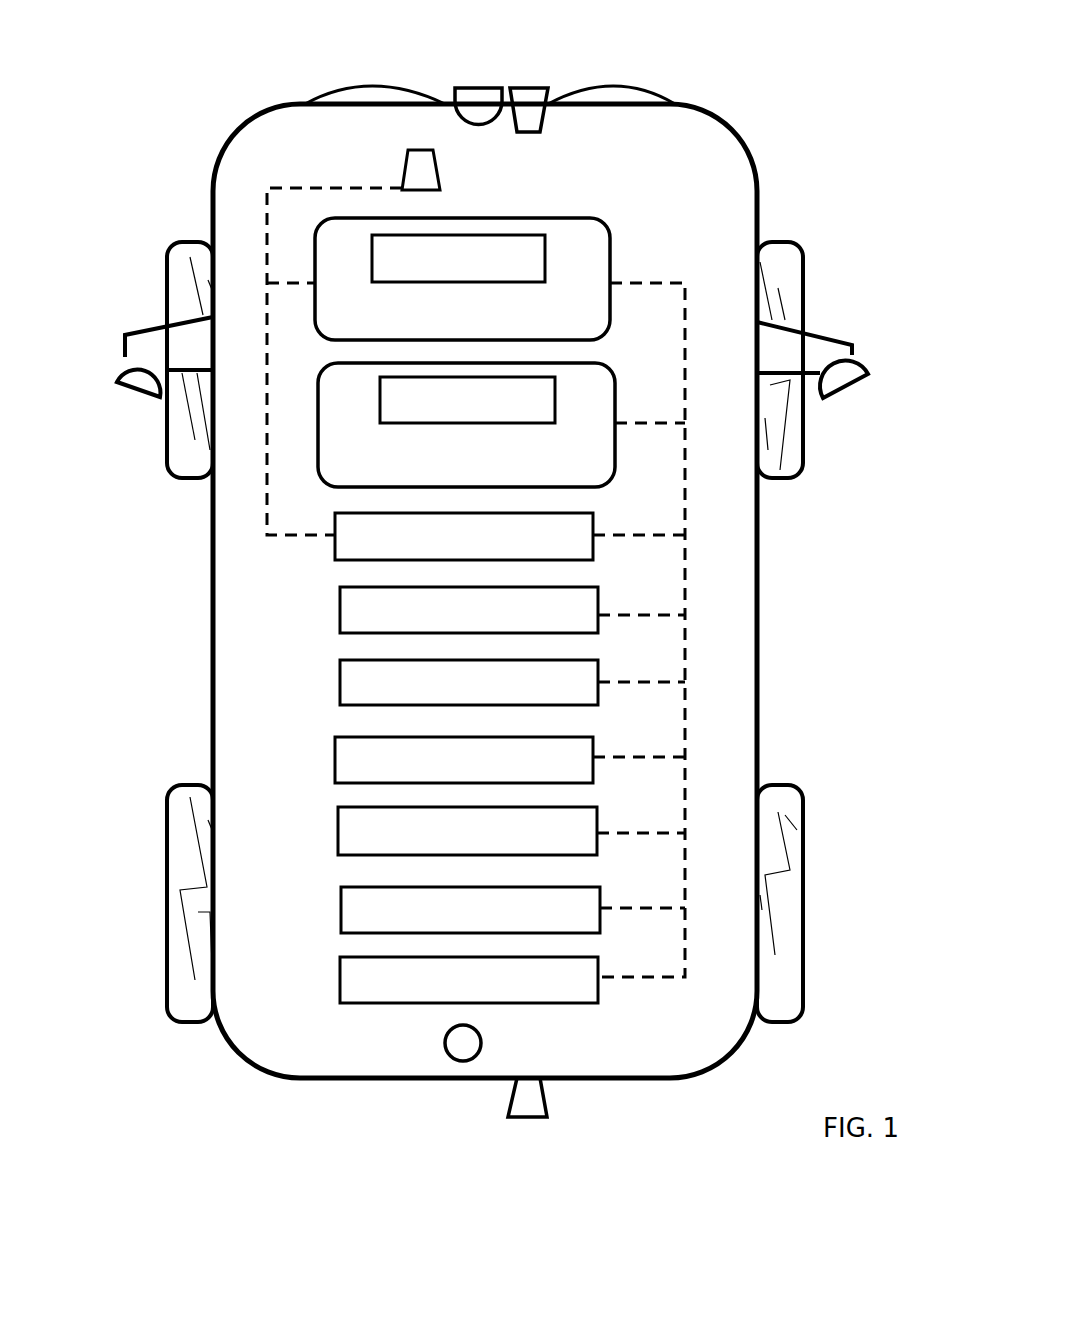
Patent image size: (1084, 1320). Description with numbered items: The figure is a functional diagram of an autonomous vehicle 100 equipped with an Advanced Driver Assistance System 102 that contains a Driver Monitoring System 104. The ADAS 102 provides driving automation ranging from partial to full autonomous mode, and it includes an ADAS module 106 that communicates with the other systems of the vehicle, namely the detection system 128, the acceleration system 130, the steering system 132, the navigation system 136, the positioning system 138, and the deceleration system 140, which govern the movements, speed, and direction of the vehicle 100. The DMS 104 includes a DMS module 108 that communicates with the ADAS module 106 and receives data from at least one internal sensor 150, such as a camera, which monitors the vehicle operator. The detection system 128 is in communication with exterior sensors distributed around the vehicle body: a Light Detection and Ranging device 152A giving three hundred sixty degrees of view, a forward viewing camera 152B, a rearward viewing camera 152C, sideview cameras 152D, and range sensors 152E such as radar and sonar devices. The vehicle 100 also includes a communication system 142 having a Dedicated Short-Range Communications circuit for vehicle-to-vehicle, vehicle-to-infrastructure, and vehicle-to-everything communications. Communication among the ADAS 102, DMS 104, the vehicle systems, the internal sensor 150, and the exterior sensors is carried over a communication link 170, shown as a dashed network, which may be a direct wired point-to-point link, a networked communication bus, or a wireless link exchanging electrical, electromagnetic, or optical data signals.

The vehicle 100 is at (811, 171).
The Advanced Driver Assistance System 102 is at (442, 465).
The Driver Monitoring System 104 is at (435, 320).
The ADAS module 106 is at (442, 415).
The DMS module 108 is at (435, 270).
The detection system 128 is at (445, 553).
The acceleration system 130 is at (445, 627).
The steering system 132 is at (449, 698).
The navigation system 136 is at (449, 772).
The positioning system 138 is at (447, 845).
The deceleration system 140 is at (455, 923).
The communication system 142 is at (452, 992).
The internal sensor 150 is at (422, 165).
The Light Detection and Ranging device 152A is at (460, 1043).
The forward viewing camera 152B is at (533, 108).
The rearward viewing camera 152C is at (530, 1102).
The sideview camera 152D is at (142, 384).
The range sensor 152E is at (477, 107).
The communication link 170 is at (688, 731).